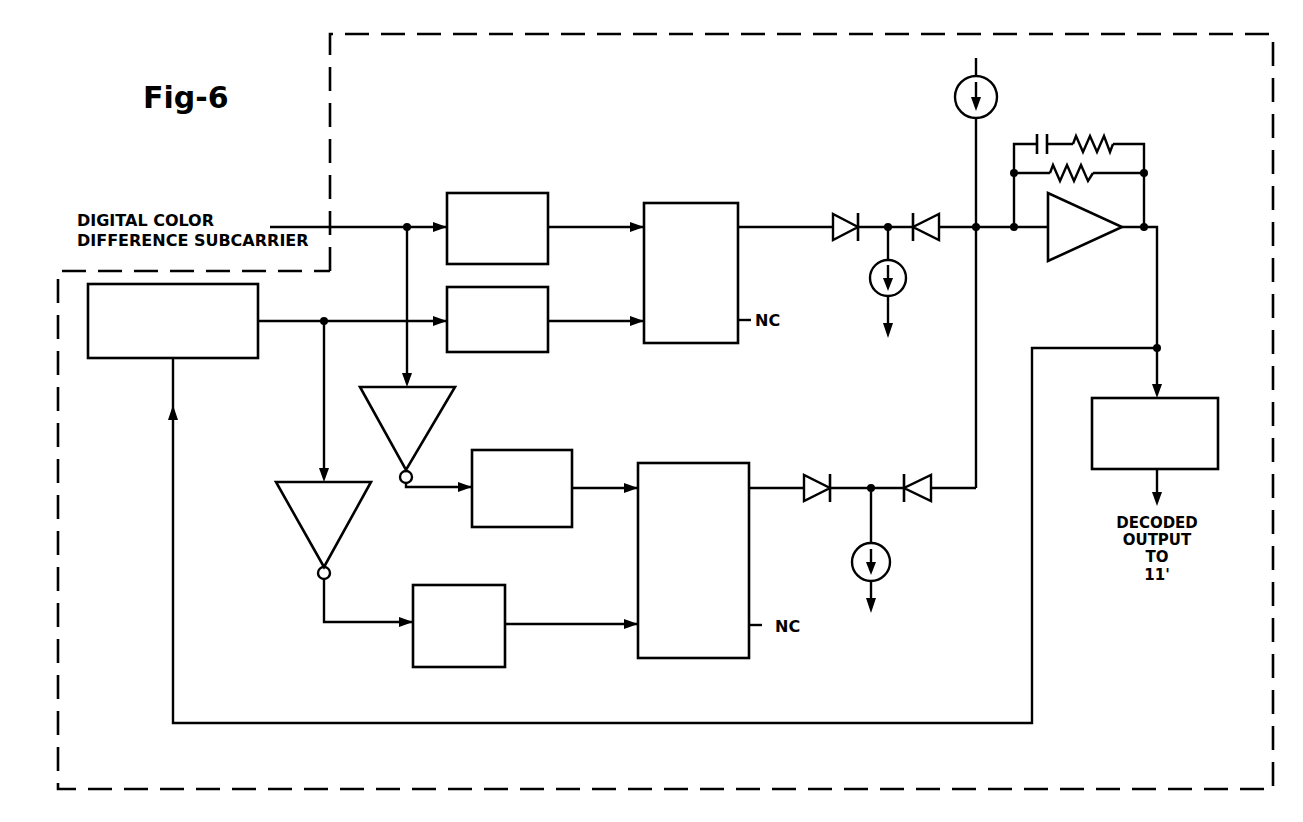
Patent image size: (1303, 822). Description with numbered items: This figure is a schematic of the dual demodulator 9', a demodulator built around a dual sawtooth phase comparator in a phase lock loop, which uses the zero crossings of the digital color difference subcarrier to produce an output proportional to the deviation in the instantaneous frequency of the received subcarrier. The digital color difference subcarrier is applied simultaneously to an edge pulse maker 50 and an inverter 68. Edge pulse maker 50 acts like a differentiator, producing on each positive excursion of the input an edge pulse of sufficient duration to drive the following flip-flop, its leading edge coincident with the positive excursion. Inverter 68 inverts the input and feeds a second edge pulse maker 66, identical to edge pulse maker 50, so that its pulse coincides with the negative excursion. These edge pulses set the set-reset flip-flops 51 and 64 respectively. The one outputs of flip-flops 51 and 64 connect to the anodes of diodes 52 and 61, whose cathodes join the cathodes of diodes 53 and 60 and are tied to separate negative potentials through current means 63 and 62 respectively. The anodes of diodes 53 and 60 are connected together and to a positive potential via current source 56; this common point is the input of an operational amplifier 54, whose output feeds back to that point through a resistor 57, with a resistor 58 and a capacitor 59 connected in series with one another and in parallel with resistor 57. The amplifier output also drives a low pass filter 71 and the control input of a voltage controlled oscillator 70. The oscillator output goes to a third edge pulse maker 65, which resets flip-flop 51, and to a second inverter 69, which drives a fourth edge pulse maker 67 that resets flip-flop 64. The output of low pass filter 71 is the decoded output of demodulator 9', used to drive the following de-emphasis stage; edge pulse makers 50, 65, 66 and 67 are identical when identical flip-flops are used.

The dual demodulator 9' is at (665, 396).
The edge pulse maker 50 is at (520, 193).
The set-reset flip-flop 51 is at (705, 203).
The diode 52 is at (845, 214).
The diode 53 is at (927, 214).
The operational amplifier 54 is at (1094, 241).
The current source 56 is at (997, 101).
The resistor 57 is at (1082, 178).
The resistor 58 is at (1100, 139).
The capacitor 59 is at (1048, 138).
The diode 60 is at (916, 476).
The diode 61 is at (819, 476).
The current means 62 is at (858, 548).
The current means 63 is at (870, 279).
The set-reset flip-flop 64 is at (706, 463).
The third edge pulse maker 65 is at (528, 352).
The second edge pulse maker 66 is at (572, 508).
The fourth edge pulse maker 67 is at (493, 585).
The inverter 68 is at (437, 420).
The second inverter 69 is at (344, 533).
The voltage controlled oscillator 70 is at (224, 358).
The low pass filter 71 is at (1179, 398).